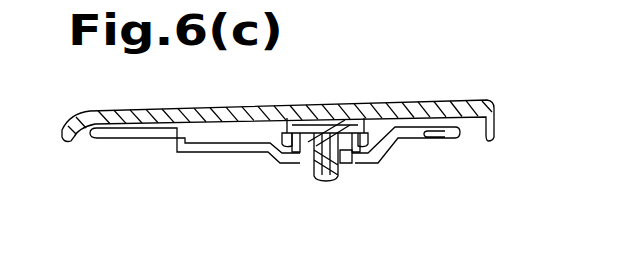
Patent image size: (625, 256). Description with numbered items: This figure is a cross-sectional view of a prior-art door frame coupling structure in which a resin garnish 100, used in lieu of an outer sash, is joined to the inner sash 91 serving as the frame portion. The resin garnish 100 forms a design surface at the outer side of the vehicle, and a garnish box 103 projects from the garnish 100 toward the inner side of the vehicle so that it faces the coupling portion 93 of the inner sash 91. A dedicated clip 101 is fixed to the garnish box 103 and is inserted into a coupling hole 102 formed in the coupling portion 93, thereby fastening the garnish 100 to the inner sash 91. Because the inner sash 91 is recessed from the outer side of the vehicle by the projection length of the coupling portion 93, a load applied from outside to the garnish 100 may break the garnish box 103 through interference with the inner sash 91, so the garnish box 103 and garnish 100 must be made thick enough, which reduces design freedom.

The resin garnish 100 is at (356, 104).
The clip 101 is at (325, 110).
The garnish box 103 is at (272, 110).
The coupling hole 102 is at (313, 170).
The coupling portion 93 is at (358, 165).
The inner sash 91 is at (434, 138).